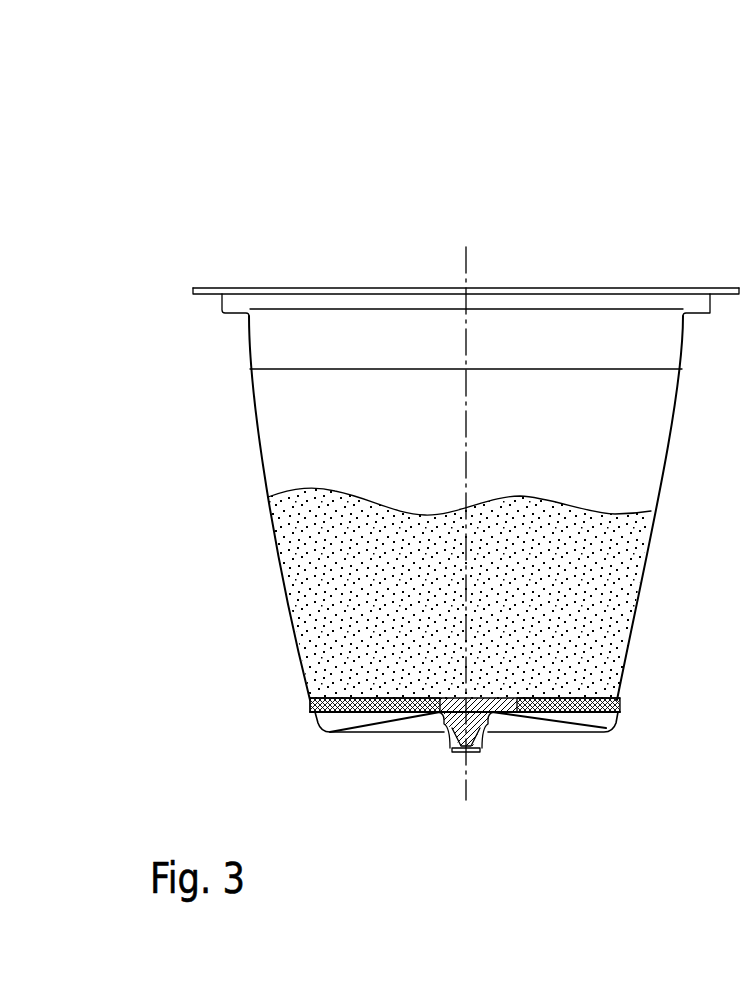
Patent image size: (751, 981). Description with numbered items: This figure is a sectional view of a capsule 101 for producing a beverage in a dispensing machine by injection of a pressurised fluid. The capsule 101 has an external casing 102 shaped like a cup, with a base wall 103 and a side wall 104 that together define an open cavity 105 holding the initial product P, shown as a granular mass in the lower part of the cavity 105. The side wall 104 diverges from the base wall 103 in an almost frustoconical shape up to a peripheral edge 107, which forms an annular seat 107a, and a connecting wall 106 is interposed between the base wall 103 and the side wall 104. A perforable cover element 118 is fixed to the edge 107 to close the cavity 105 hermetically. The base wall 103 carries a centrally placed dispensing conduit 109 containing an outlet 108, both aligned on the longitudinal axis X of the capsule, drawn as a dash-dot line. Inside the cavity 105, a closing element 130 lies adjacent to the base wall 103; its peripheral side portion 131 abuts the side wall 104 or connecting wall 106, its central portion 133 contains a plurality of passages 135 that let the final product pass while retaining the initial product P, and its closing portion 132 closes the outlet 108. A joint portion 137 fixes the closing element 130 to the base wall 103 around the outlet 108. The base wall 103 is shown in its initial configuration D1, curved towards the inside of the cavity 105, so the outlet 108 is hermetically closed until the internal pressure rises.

The capsule 101 is at (648, 190).
The external casing 102 is at (238, 398).
The base wall 103 is at (390, 721).
The side wall 104 is at (280, 517).
The open cavity 105 is at (435, 447).
The connecting wall 106 is at (323, 732).
The peripheral edge 107 is at (210, 288).
The annular seat 107a is at (225, 301).
The outlet 108 is at (469, 752).
The dispensing conduit 109 is at (481, 733).
The cover element 118 is at (407, 288).
The closing element 130 is at (508, 695).
The peripheral side portion 131 is at (312, 708).
The closing portion 132 is at (490, 726).
The central portion 133 is at (360, 697).
The passages 135 is at (607, 695).
The joint portion 137 is at (433, 717).
The longitudinal axis X is at (467, 355).
The initial product P is at (577, 617).
The initial configuration D1 is at (283, 742).